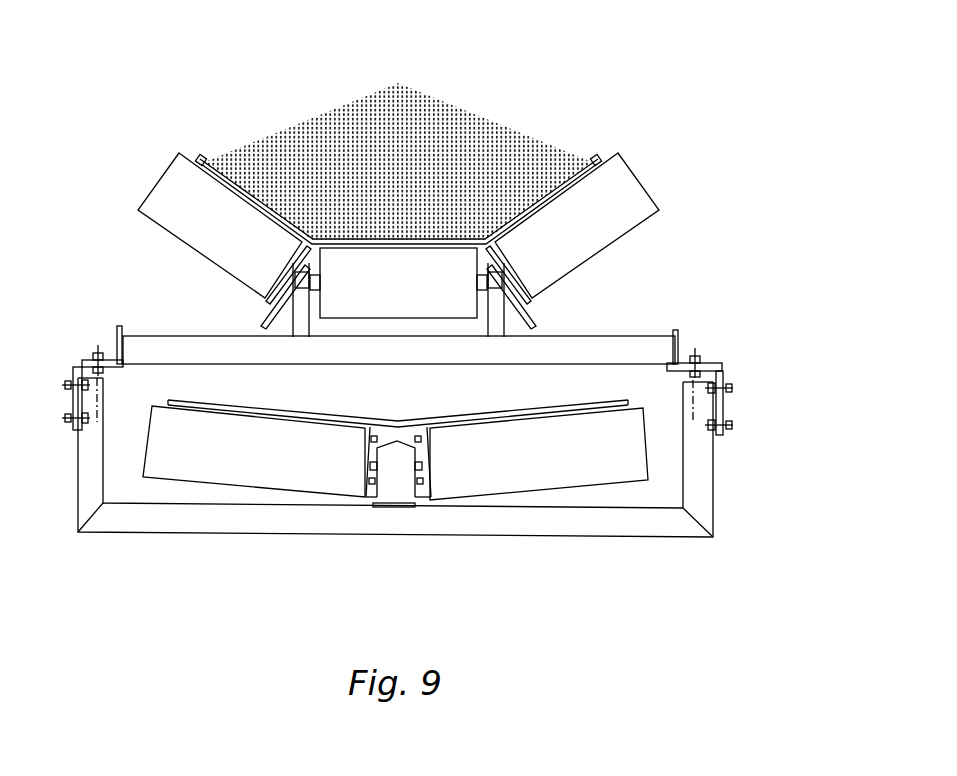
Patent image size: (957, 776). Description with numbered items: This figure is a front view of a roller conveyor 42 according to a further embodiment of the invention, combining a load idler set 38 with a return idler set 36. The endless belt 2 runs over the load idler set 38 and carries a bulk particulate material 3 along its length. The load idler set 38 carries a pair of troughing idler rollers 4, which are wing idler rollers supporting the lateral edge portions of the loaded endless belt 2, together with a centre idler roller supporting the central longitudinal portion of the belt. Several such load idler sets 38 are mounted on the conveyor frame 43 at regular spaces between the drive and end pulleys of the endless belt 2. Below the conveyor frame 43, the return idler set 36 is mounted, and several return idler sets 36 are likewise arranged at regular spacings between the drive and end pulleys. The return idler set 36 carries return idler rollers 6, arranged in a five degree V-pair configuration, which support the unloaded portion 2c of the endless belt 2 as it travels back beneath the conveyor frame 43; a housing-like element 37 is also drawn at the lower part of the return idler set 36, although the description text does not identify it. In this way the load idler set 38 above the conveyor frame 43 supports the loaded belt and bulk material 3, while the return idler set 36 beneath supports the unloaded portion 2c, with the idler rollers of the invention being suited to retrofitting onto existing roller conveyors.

The endless belt 2 is at (218, 170).
The unloaded portion of the endless belt 2c is at (448, 415).
The bulk material 3 is at (442, 138).
The troughing idler rollers 4 is at (167, 212).
The return idler rollers 6 is at (308, 485).
The return idler set 36 is at (660, 453).
The frame housing 37 is at (608, 522).
The load idler set 38 is at (643, 148).
The roller conveyor 42 is at (155, 145).
The conveyor frame 43 is at (73, 363).